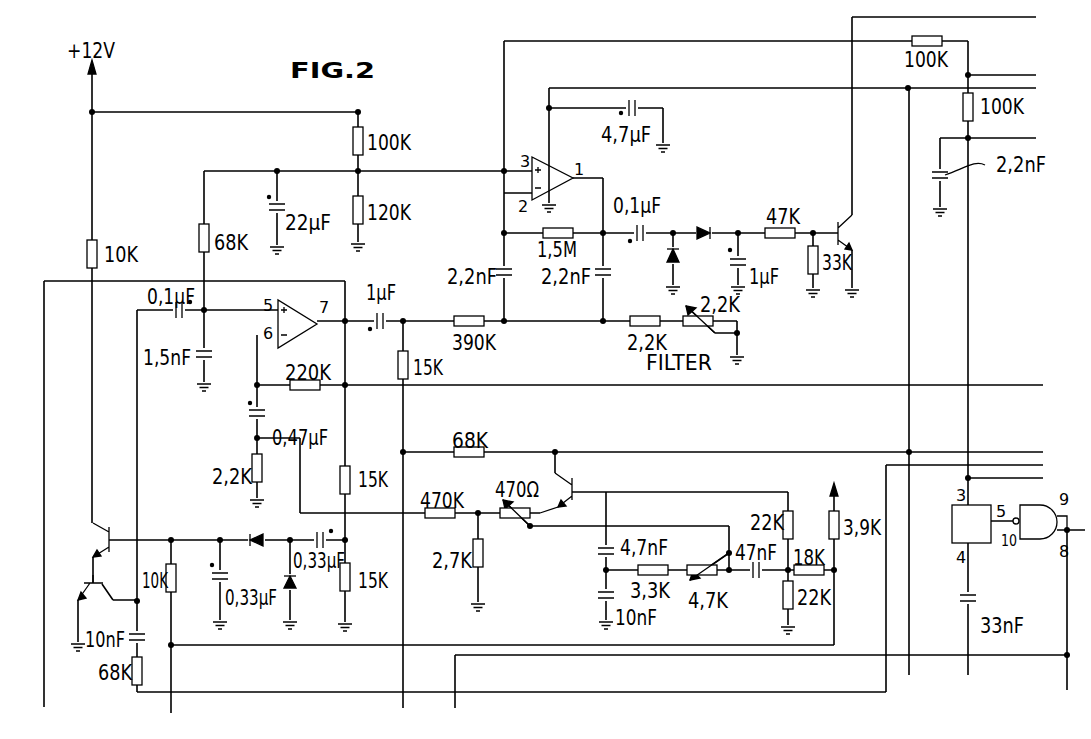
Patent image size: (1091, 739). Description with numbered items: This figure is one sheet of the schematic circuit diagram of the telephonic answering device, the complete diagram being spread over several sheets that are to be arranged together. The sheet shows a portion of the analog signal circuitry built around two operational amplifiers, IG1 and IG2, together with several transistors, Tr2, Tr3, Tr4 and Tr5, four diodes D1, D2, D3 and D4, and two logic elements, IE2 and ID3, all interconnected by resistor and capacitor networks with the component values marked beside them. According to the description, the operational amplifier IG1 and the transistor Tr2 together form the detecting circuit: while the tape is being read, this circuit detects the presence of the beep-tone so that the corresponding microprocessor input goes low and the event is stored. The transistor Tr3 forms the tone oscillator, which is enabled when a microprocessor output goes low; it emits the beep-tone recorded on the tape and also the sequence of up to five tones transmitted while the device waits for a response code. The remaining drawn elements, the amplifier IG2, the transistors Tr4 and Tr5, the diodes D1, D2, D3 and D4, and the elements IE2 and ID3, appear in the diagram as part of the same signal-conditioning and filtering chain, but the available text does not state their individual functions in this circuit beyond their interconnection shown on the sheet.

The detecting circuit operational amplifier IG1 is at (552, 178).
The operational amplifier IG2 is at (297, 324).
The detecting circuit transistor Tr2 is at (862, 232).
The tone oscillator Tr3 is at (575, 484).
The transistor Tr4 is at (84, 540).
The transistor Tr5 is at (94, 601).
The diode D1 is at (256, 529).
The display unit D2 is at (303, 589).
The diode D3 is at (685, 263).
The diode D4 is at (706, 222).
The integrated circuit IE2 is at (971, 524).
The logic gate ID3 is at (1040, 522).